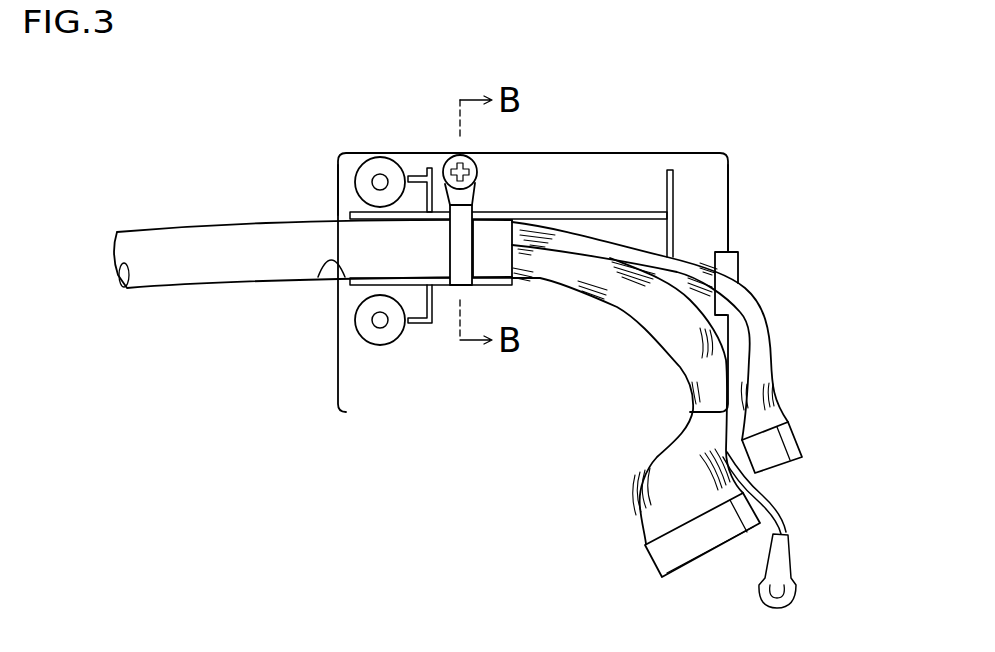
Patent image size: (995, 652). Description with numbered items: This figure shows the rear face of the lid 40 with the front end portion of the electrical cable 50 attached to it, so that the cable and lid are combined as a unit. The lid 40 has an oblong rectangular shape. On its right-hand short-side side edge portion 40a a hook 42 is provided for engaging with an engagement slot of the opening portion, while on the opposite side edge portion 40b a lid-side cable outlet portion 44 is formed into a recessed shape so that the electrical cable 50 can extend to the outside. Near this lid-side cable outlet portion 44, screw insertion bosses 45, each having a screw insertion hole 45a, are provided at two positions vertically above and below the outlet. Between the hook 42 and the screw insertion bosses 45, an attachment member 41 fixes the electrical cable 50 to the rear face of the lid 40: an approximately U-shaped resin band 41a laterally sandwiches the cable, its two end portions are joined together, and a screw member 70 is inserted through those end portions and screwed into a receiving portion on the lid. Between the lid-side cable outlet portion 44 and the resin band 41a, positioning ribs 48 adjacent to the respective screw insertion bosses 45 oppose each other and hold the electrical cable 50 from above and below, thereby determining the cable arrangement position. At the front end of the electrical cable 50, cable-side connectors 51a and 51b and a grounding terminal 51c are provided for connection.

The lid 40 is at (664, 153).
The short-side side edge portion 40a is at (729, 176).
The other side edge portion 40b is at (338, 184).
The attachment member 41 is at (477, 198).
The resin band 41a is at (456, 286).
The hook 42 is at (739, 261).
The lid-side cable outlet portion 44 is at (318, 278).
The screw insertion boss 45 is at (395, 164).
The screw insertion hole 45a is at (380, 180).
The positioning rib 48 is at (410, 177).
The electrical cable 50 is at (265, 230).
The cable-side connector 51a is at (696, 548).
The cable-side connector 51b is at (797, 437).
The grounding terminal 51c is at (790, 557).
The screw member 70 is at (478, 160).